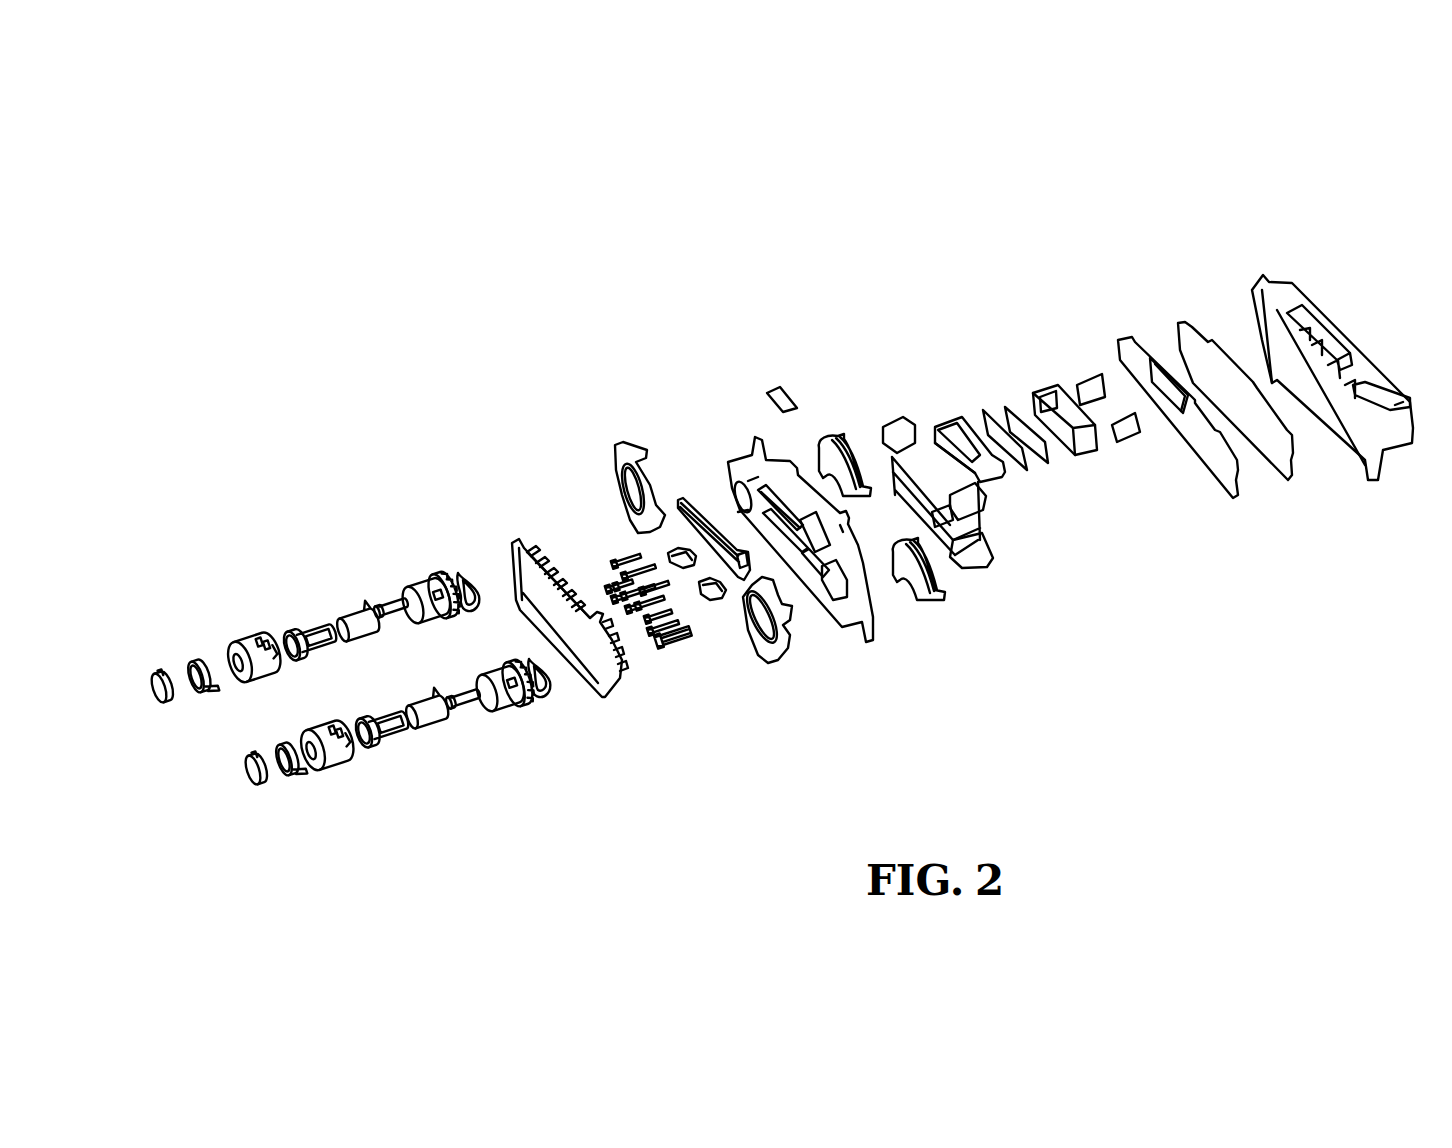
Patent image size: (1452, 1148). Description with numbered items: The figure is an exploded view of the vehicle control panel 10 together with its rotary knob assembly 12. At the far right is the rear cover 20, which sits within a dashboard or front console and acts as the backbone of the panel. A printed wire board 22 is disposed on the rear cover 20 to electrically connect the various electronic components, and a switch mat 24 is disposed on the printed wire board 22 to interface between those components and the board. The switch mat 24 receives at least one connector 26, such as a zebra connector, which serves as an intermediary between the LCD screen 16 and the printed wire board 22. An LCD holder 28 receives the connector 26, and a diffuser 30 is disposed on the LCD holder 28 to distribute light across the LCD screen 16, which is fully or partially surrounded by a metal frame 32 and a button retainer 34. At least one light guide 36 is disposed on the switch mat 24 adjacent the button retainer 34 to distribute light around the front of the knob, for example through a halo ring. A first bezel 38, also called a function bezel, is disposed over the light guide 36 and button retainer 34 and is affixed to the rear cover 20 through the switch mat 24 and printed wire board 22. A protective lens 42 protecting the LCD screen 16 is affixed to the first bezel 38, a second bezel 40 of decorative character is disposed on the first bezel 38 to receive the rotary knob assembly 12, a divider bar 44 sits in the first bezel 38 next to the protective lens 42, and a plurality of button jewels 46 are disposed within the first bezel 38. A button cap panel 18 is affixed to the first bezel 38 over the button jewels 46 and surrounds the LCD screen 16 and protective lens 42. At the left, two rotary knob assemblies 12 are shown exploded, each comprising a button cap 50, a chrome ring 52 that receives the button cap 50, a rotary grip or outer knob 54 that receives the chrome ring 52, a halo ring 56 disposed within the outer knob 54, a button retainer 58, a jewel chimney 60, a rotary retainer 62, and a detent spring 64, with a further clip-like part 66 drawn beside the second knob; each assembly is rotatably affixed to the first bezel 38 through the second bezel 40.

The vehicle control panel 10 is at (1305, 158).
The rotary knob assembly 12 is at (266, 483).
The LCD screen 16 is at (1030, 470).
The button cap panel 18 is at (513, 543).
The rear cover 20 is at (1252, 292).
The printed wire board 22 is at (1180, 328).
The switch mat 24 is at (1240, 502).
The connector 26 is at (1077, 385).
The LCD holder 28 is at (1080, 452).
The diffuser 30 is at (997, 406).
The metal frame 32 is at (940, 425).
The button retainer 34 is at (976, 560).
The light guide 36 is at (937, 600).
The first bezel 38 is at (737, 458).
The second bezel 40 is at (614, 456).
The protective lens 42 is at (681, 497).
The divider bar 44 is at (716, 602).
The button jewels 46 is at (670, 652).
The button cap 50 is at (248, 782).
The chrome ring 52 is at (288, 772).
The outer knob 54 is at (240, 655).
The halo ring 56 is at (290, 640).
The button retainer 58 is at (435, 722).
The jewel chimney 60 is at (466, 705).
The rotary retainer 62 is at (416, 598).
The detent spring 64 is at (459, 575).
The clip 66 is at (548, 698).